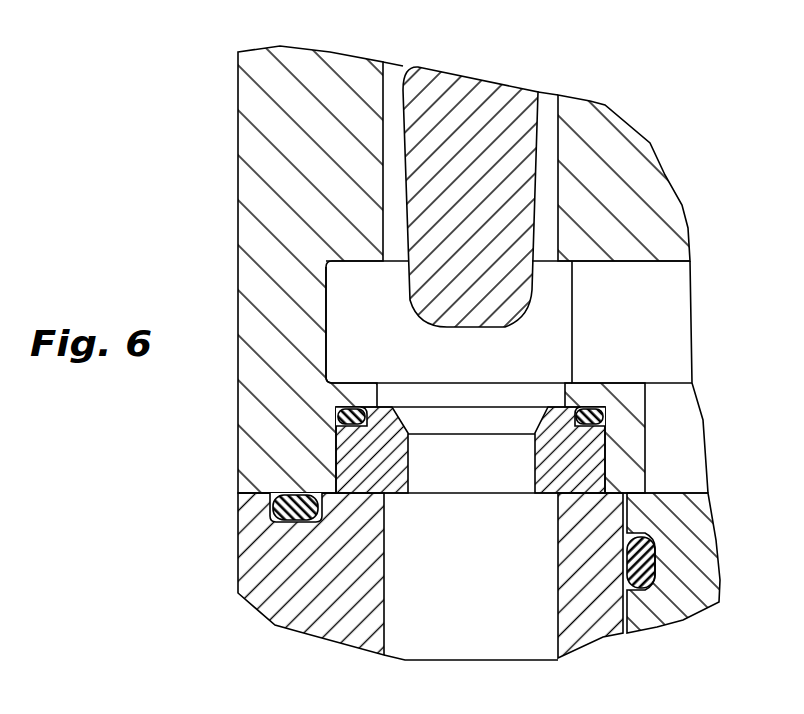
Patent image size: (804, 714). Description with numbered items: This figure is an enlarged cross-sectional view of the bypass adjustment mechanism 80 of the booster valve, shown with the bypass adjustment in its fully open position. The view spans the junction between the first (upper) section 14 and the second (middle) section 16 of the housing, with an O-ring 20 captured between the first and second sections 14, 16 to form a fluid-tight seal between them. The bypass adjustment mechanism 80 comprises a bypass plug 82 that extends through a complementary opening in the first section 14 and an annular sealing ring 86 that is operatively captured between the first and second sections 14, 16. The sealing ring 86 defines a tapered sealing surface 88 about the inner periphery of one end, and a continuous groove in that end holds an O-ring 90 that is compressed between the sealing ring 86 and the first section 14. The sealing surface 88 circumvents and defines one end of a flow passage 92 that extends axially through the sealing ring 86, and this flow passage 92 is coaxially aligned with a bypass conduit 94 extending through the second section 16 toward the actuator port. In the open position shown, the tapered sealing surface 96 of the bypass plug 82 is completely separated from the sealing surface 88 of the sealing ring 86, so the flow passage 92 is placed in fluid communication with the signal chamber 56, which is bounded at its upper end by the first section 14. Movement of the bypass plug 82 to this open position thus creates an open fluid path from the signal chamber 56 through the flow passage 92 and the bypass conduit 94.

The first (upper) section 14 is at (238, 130).
The second (middle) section 16 is at (307, 620).
The O-ring 20 is at (288, 507).
The signal chamber 56 is at (656, 324).
The bypass adjustment mechanism 80 is at (674, 60).
The bypass plug 82 is at (463, 92).
The annular sealing ring 86 is at (585, 460).
The tapered sealing surface 88 is at (539, 426).
The O-ring 90 is at (600, 412).
The flow passage 92 is at (482, 465).
The bypass conduit 94 is at (420, 602).
The tapered sealing surface 96 is at (412, 303).